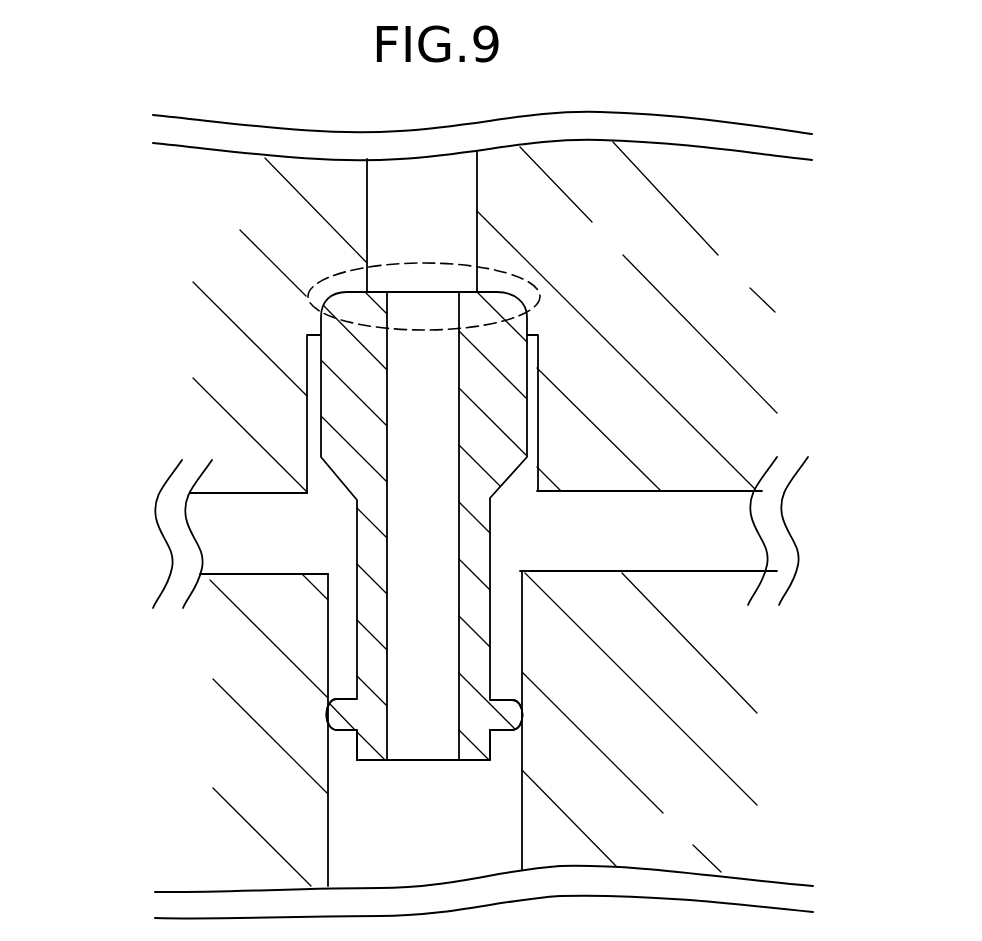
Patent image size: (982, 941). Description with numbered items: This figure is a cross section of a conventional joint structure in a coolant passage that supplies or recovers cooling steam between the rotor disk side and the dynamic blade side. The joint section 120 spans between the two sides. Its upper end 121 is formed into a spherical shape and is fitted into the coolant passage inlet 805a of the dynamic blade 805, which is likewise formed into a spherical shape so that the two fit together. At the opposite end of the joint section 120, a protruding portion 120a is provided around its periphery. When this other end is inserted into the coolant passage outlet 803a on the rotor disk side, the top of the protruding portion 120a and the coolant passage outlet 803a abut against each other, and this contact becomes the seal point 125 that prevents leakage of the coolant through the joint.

The dynamic blade 805 is at (227, 269).
The coolant passage inlet 805a is at (298, 420).
The joint section 120 is at (345, 471).
The end 121 is at (505, 272).
The seal point 125 is at (316, 718).
The protruding portion 120a is at (338, 730).
The coolant passage outlet 803a is at (534, 802).